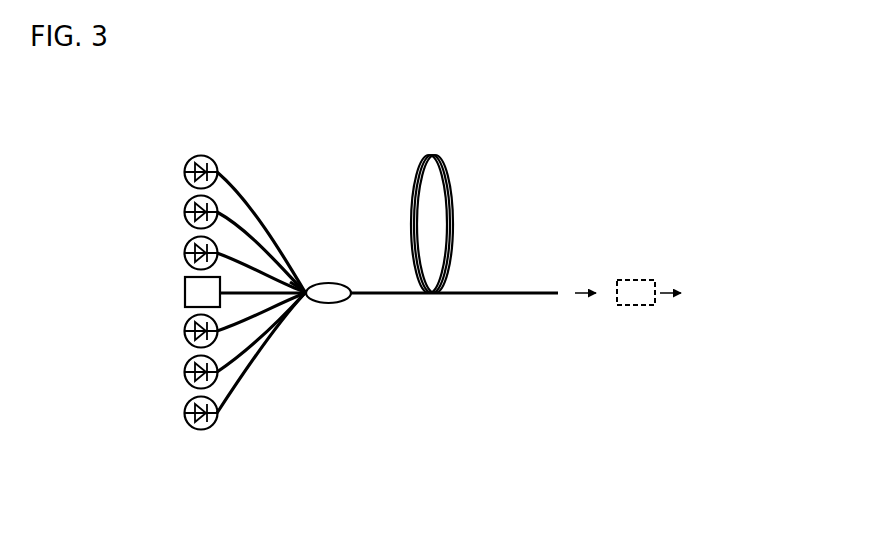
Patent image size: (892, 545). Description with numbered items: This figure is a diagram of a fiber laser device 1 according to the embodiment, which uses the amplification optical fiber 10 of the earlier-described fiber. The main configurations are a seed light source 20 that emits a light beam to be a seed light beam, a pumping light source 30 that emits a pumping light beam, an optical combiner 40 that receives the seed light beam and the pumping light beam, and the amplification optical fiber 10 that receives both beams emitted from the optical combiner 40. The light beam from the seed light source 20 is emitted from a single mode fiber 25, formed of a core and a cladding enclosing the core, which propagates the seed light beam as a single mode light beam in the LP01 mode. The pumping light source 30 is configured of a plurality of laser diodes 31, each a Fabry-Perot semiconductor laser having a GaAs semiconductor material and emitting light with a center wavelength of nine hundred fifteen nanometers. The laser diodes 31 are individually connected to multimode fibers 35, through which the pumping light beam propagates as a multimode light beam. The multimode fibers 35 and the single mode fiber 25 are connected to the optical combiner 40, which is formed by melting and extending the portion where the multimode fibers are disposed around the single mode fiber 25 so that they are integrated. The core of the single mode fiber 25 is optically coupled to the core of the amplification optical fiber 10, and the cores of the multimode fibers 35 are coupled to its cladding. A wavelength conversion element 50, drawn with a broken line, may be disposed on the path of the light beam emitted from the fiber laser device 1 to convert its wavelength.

The fiber laser device 1 is at (551, 136).
The amplification optical fiber 10 is at (452, 291).
The seed light source 20 is at (191, 294).
The single mode fiber 25 is at (276, 272).
The pumping light source 30 is at (175, 132).
The laser diode 31 is at (188, 164).
The multimode fiber 35 is at (243, 262).
The optical combiner 40 is at (332, 290).
The wavelength conversion element 50 is at (647, 280).